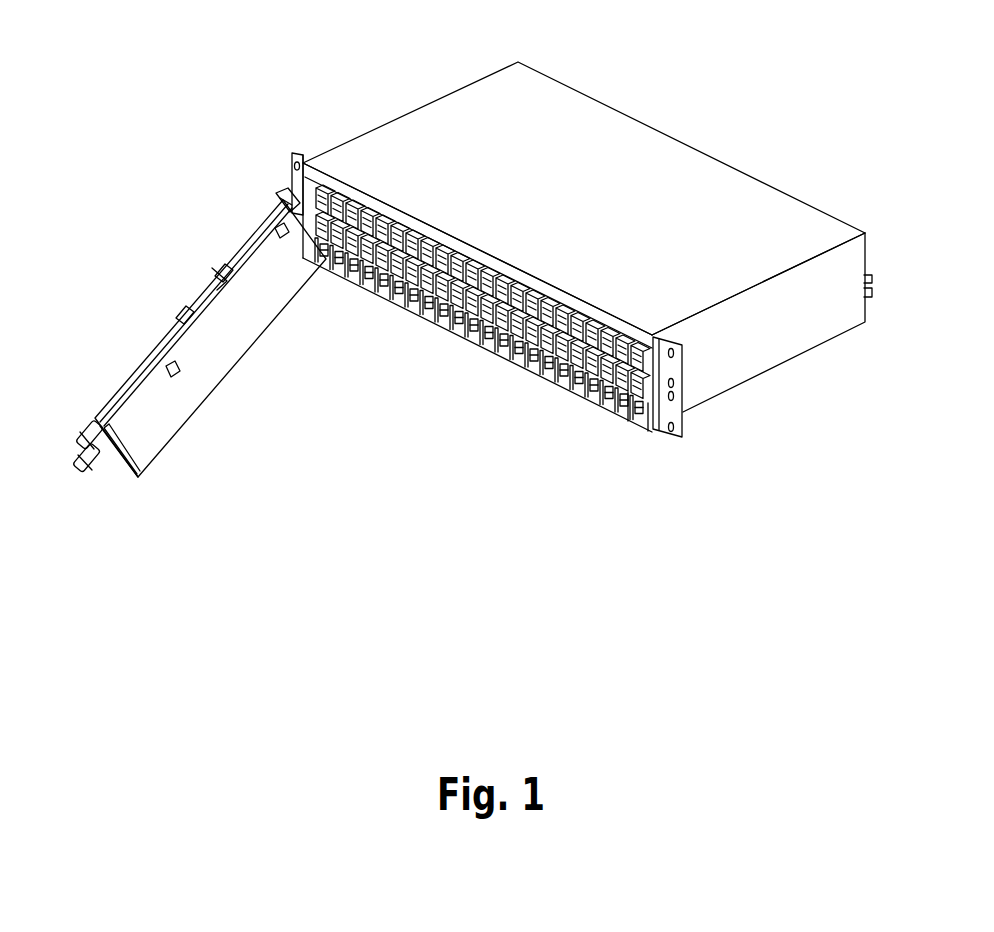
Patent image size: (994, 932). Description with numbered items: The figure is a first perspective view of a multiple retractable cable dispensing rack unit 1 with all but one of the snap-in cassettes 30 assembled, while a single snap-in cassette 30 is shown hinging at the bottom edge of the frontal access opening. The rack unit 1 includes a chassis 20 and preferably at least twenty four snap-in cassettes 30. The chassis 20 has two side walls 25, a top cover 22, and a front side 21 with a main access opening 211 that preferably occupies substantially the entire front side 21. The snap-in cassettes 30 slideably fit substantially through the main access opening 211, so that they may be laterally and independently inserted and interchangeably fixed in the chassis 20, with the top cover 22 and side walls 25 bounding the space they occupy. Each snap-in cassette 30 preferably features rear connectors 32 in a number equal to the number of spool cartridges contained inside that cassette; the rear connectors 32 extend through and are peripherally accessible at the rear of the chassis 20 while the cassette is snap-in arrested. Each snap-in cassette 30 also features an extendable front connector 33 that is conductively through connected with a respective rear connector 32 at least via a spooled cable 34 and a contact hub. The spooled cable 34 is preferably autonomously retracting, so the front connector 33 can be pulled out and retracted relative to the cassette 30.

The multiple retractable cable dispensing rack unit 1 is at (302, 575).
The chassis 20 is at (518, 62).
The front side 21 is at (410, 337).
The main access opening 211 is at (475, 298).
The top cover 22 is at (602, 103).
The side wall 25 is at (730, 353).
The snap-in cassette 30 is at (138, 480).
The rear connector 32 is at (287, 200).
The extendable front connector 33 is at (93, 425).
The spooled cable 34 is at (182, 320).